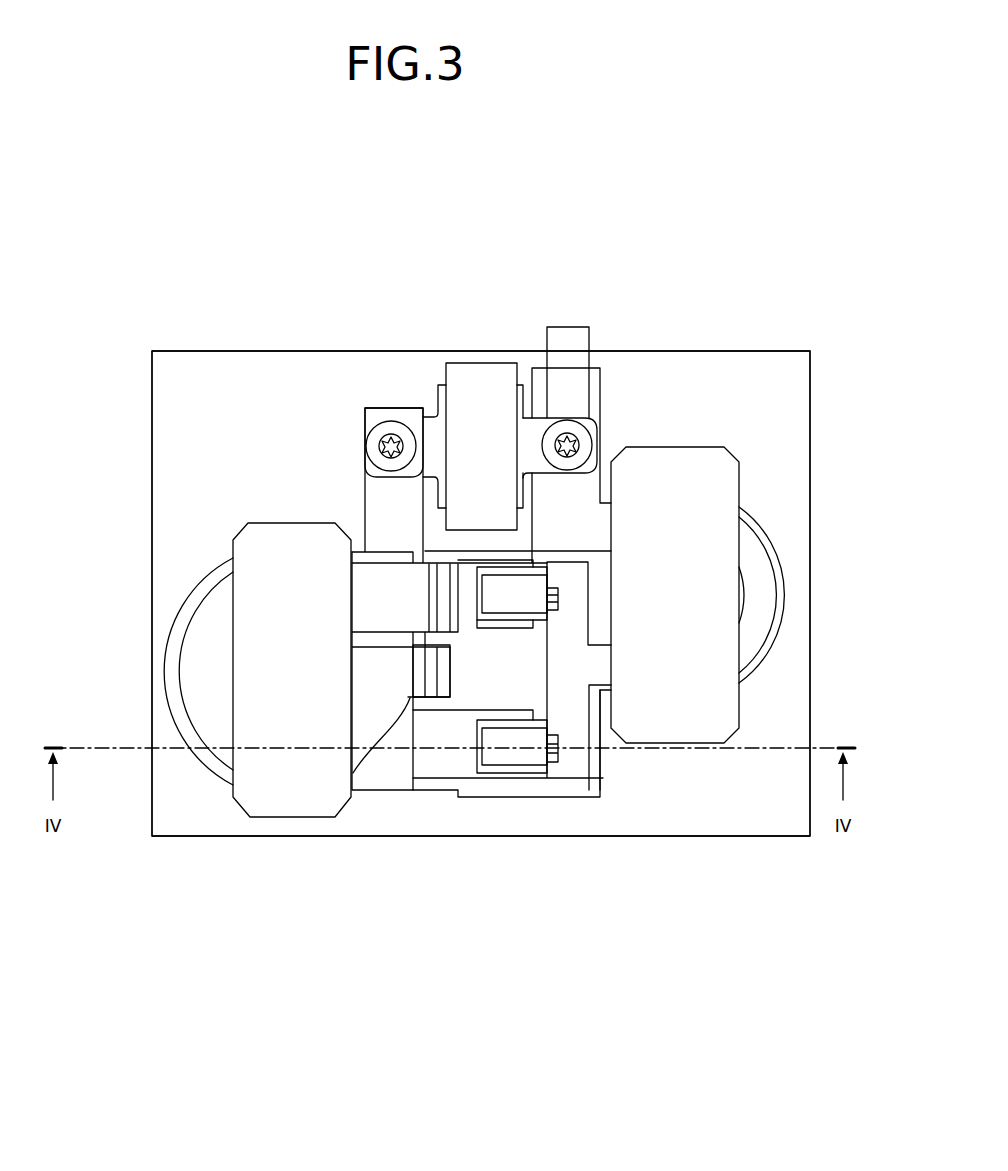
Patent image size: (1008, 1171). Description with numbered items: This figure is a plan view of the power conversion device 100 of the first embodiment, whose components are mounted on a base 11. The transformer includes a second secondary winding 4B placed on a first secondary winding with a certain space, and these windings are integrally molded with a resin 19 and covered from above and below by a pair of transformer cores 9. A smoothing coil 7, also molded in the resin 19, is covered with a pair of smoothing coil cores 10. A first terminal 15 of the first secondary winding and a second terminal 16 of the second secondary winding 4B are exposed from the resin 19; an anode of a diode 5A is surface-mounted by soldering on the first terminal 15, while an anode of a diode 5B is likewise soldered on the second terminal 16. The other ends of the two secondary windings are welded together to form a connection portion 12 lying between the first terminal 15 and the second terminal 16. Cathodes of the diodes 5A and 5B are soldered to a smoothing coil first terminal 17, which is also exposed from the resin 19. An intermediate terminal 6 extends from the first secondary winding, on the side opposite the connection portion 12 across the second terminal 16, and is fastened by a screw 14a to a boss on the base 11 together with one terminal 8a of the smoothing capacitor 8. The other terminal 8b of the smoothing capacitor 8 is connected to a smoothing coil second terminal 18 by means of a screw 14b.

The power conversion device 100 is at (505, 162).
The base 11 is at (207, 387).
The intermediate terminal 6 is at (398, 407).
The smoothing capacitor 8 is at (477, 378).
The one terminal of the smoothing capacitor 8a is at (428, 428).
The another terminal of the smoothing capacitor 8b is at (525, 427).
The smoothing coil second terminal 18 is at (580, 410).
The screw 14a is at (383, 430).
The screw 14b is at (583, 445).
The diode 5B is at (528, 597).
The diode 5A is at (515, 755).
The smoothing coil 7 is at (743, 565).
The second secondary winding 4B is at (210, 618).
The transformer core 9 is at (260, 783).
The smoothing coil core 10 is at (683, 727).
The connection portion 12 is at (440, 738).
The second terminal 16 is at (466, 610).
The first terminal 15 is at (458, 758).
The resin 19 is at (502, 785).
The smoothing coil first terminal 17 is at (578, 765).